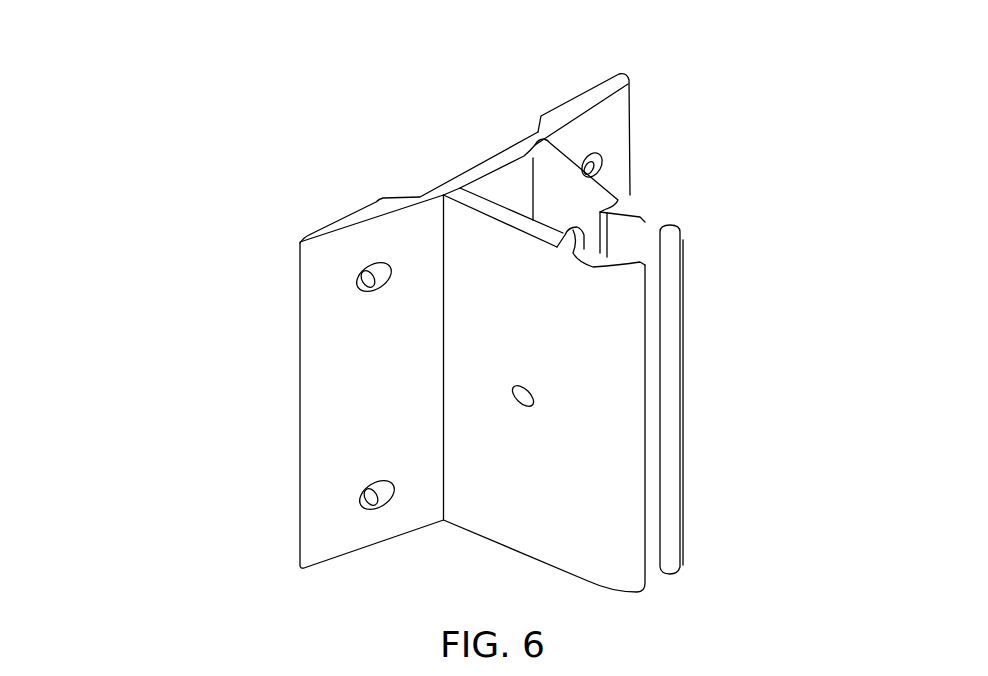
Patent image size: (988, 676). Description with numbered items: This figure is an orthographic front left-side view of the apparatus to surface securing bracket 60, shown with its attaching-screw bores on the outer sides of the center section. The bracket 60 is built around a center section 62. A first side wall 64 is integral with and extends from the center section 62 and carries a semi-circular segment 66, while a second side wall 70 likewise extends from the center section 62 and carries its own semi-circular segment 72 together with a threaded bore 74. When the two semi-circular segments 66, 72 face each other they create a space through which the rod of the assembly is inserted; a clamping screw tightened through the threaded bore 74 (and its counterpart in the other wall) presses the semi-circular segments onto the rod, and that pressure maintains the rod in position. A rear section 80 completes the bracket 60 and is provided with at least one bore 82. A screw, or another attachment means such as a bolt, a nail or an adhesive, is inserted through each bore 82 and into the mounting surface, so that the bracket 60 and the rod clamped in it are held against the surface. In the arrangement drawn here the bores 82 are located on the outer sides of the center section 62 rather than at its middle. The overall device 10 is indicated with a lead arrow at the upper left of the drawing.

The assembly 10 is at (116, 79).
The apparatus to surface securing bracket 60 is at (666, 135).
The center section 62 is at (673, 333).
The first side wall 64 is at (612, 189).
The semi-circular segment 66 is at (620, 246).
The second side wall 70 is at (570, 510).
The semi-circular segment 72 is at (575, 262).
The threaded bore 74 is at (530, 390).
The rear section 80 is at (375, 212).
The bore 82 is at (583, 155).